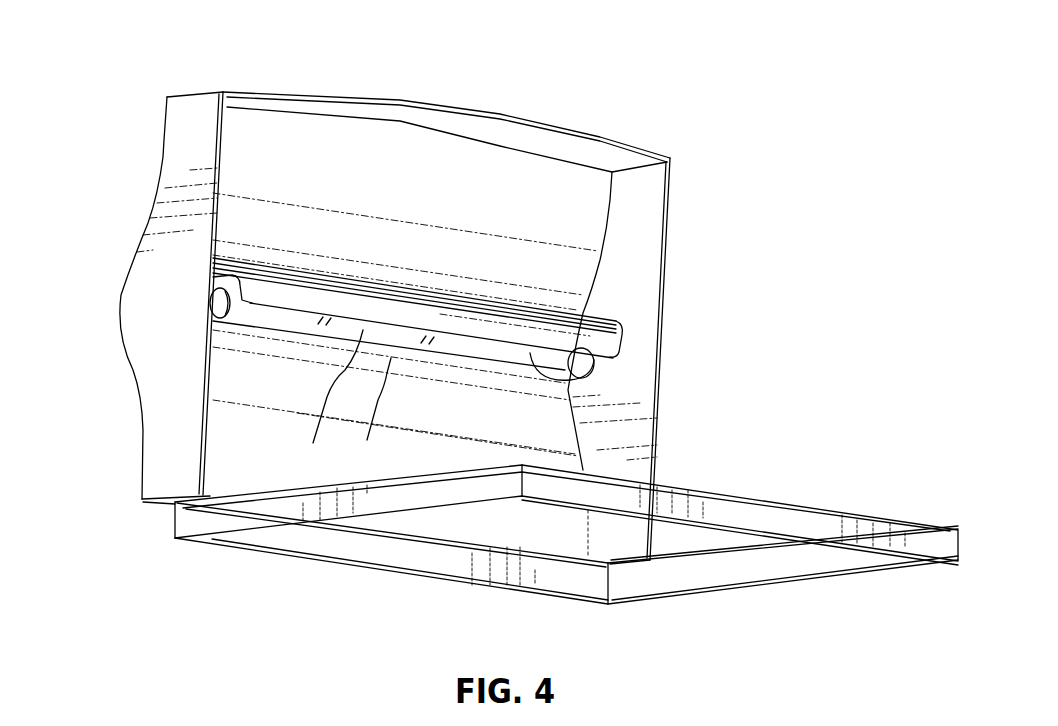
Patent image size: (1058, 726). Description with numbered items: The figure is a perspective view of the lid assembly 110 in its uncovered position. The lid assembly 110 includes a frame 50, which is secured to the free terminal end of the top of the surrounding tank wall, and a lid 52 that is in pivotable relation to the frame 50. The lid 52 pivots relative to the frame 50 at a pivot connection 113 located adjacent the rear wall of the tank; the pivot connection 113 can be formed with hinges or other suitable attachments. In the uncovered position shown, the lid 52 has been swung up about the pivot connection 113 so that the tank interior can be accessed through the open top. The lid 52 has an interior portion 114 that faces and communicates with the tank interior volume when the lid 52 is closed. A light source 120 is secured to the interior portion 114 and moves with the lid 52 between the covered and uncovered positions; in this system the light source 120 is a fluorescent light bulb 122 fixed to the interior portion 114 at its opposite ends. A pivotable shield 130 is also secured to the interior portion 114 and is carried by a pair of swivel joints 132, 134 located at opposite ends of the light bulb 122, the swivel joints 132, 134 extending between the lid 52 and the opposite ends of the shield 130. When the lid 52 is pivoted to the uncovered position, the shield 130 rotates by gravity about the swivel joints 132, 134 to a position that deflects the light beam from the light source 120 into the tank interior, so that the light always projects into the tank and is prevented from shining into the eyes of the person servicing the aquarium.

The lid assembly 110 is at (117, 138).
The lid 52 is at (475, 127).
The interior portion 114 is at (580, 192).
The swivel joint 134 is at (618, 323).
The swivel joint 132 is at (213, 260).
The pivotable shield 130 is at (380, 312).
The fluorescent light bulb 122 is at (325, 400).
The light source 120 is at (392, 355).
The pivot connection 113 is at (162, 517).
The frame 50 is at (895, 520).